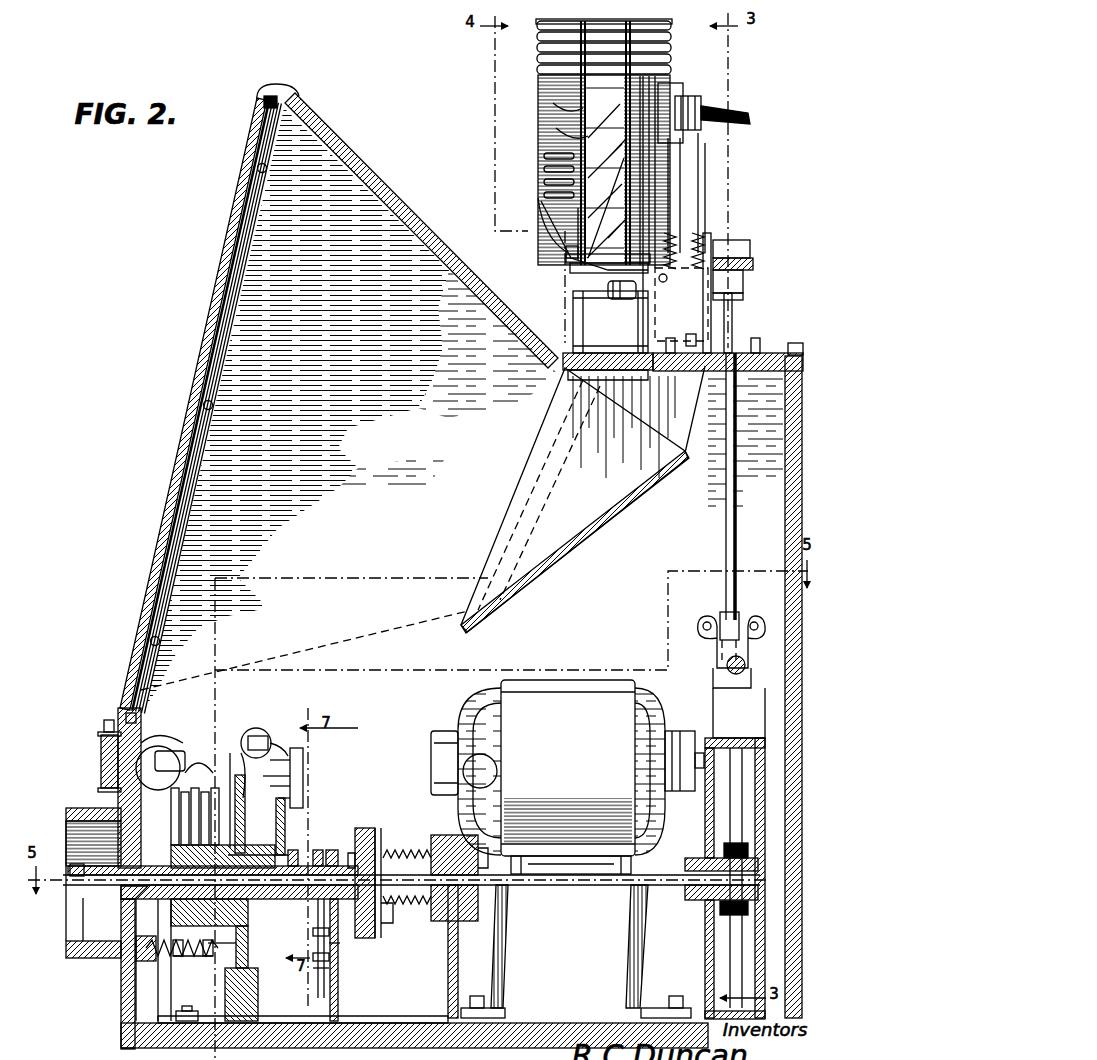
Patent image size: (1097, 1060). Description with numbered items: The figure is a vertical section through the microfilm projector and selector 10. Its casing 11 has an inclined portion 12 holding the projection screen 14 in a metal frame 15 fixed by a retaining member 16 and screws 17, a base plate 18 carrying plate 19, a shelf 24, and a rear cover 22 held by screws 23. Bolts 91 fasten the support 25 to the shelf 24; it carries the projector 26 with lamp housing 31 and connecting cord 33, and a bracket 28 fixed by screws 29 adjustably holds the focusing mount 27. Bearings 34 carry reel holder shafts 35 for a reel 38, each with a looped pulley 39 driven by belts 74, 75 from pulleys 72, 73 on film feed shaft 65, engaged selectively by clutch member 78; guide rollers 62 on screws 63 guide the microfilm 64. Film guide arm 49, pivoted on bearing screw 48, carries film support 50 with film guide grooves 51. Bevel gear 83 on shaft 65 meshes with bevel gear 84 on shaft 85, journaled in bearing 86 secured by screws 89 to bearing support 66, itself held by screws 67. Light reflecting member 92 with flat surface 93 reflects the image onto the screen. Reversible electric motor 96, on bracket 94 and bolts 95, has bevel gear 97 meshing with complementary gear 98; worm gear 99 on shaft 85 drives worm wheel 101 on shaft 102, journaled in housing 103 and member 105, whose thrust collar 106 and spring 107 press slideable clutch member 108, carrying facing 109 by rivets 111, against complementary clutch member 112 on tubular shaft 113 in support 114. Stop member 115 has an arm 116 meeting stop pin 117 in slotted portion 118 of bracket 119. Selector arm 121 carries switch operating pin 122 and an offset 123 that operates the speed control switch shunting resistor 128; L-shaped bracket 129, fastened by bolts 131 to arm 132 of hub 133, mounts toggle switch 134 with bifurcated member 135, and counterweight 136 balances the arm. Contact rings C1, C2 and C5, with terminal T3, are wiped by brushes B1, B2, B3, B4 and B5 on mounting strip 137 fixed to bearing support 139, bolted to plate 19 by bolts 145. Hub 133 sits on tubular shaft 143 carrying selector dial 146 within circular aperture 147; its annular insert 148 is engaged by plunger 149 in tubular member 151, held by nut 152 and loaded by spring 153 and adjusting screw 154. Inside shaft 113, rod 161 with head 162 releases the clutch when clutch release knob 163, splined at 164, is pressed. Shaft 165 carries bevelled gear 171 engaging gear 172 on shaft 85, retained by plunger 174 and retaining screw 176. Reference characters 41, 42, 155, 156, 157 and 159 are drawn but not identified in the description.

The apex of hopper 10 is at (272, 75).
The apex seal block 15 is at (255, 92).
The inclined top wall 11 is at (381, 176).
The left wall 12 is at (163, 466).
The glass panel 14 is at (203, 302).
The inner rail 16 is at (142, 577).
The glass retaining clips 17 is at (249, 160).
The lamp housing 26 is at (532, 93).
The top plate 31 is at (660, 46).
The support bracket 41 is at (649, 72).
The reflector 35 is at (533, 113).
The ventilating louvers 38 is at (540, 136).
The switch block 34 is at (673, 135).
The knob 39 is at (686, 90).
The handle 33 is at (726, 106).
The rod 42 is at (664, 152).
The rod 75 is at (691, 166).
The rod 74 is at (670, 225).
The rod 78 is at (697, 205).
The spring 72 is at (662, 228).
The spring 73 is at (690, 228).
The housing lower wall 64 is at (545, 190).
The inner sleeve 62 is at (569, 236).
The retainer 63 is at (558, 243).
The plate 50 is at (560, 256).
The plate 51 is at (575, 265).
The heater element 49 is at (612, 292).
The hopper neck 28 is at (568, 300).
The neck liner 29 is at (624, 318).
The pivot 48 is at (659, 271).
The control mechanism 25 is at (648, 303).
The screw 67 is at (682, 326).
The screws 91 is at (662, 330).
The plate 83 is at (704, 228).
The bracket 65 is at (731, 240).
The gasket 84 is at (742, 253).
The block 89 is at (735, 268).
The washer 86 is at (735, 287).
The rod 66 is at (724, 300).
The operating rod 85 is at (717, 528).
The top plate 24 is at (763, 343).
The cap 23 is at (787, 337).
The neck ring 27 is at (560, 365).
The right wall 22 is at (778, 507).
The chute 93 is at (578, 514).
The deflector 92 is at (680, 450).
The rod guide 176 is at (712, 608).
The bracket 172 is at (705, 633).
The slot 174 is at (706, 650).
The support 171 is at (706, 668).
The pivot screw 165 is at (737, 660).
The motor 96 is at (557, 672).
The motor shaft 97 is at (679, 740).
The housing 98 is at (746, 763).
The plunger rod 101 is at (722, 803).
The flange 102 is at (652, 863).
The stop 99 is at (712, 898).
The plate 103 is at (697, 933).
The shaft 161 is at (57, 878).
The collar 163 is at (63, 864).
The bracket 164 is at (64, 838).
The motor support 94 is at (500, 921).
The bolts 95 is at (467, 988).
The plate 105 is at (441, 957).
The base 19 is at (538, 1015).
The bottom plate 18 is at (290, 1042).
The coupling 107 is at (420, 830).
The coupling half 106 is at (440, 905).
The spring 162 is at (395, 846).
The flange 109 is at (358, 822).
The disc 111 is at (370, 835).
The hub 112 is at (344, 845).
The sleeve 108 is at (375, 915).
The block 113 is at (323, 845).
The block 115 is at (309, 842).
The plate 114 is at (331, 988).
The contact rod 116 is at (312, 924).
The contacts 118 is at (305, 924).
The contact 117 is at (321, 940).
The contact 119 is at (309, 962).
The block 133 is at (240, 912).
The contact C5 is at (240, 930).
The arm 154 is at (240, 945).
The block 136 is at (250, 1003).
The contact C1 is at (184, 937).
The contact C2 is at (208, 937).
The spring 151 is at (178, 950).
The arm 153 is at (172, 950).
The post 139 is at (163, 990).
The screw 145 is at (185, 1006).
The post 152 is at (145, 960).
The block 149 is at (128, 950).
The wall 146 is at (113, 992).
The corner 147 is at (113, 1030).
The bearing block 143 is at (116, 896).
The pillar 148 is at (110, 790).
The boss 155 is at (93, 746).
The pin 156 is at (97, 716).
The pin 157 is at (118, 708).
The solenoid 159 is at (152, 742).
The terminal B1 is at (163, 800).
The terminal B2 is at (181, 809).
The terminal B3 is at (195, 803).
The terminal B4 is at (205, 809).
The terminal B5 is at (202, 795).
The lever 131 is at (222, 770).
The link 132 is at (235, 745).
The cam 134 is at (253, 727).
The arm 129 is at (276, 738).
The post 137 is at (237, 812).
The terminal T3 is at (237, 842).
The switch 121 is at (295, 781).
The contact 122 is at (296, 791).
The contact 123 is at (296, 776).
The contact 135 is at (290, 770).
The contact 128 is at (296, 752).